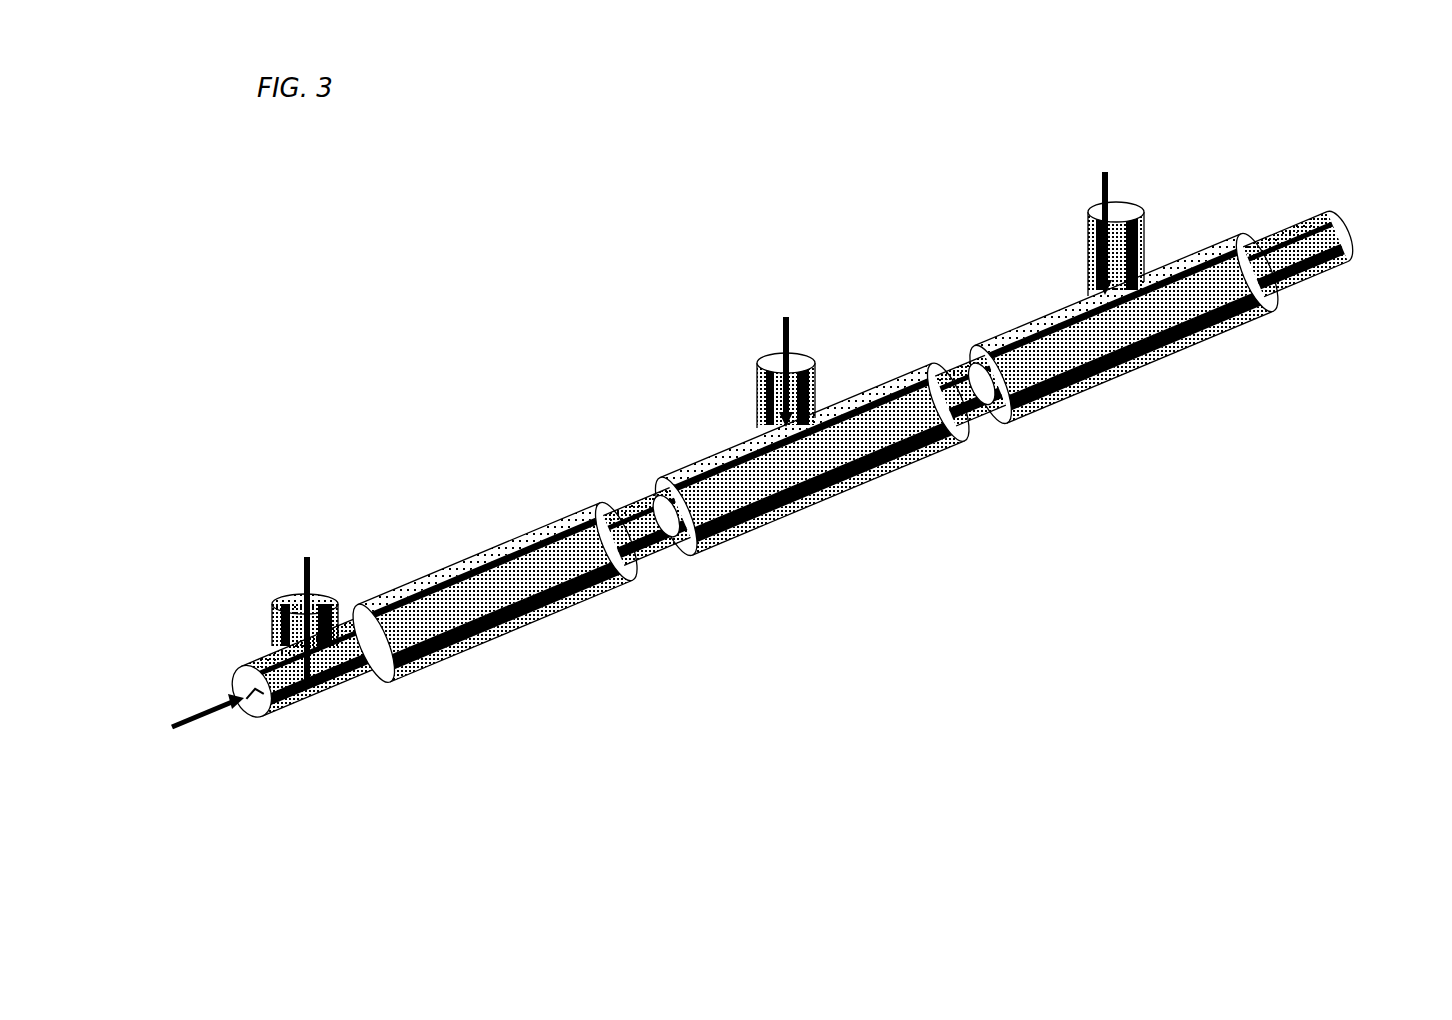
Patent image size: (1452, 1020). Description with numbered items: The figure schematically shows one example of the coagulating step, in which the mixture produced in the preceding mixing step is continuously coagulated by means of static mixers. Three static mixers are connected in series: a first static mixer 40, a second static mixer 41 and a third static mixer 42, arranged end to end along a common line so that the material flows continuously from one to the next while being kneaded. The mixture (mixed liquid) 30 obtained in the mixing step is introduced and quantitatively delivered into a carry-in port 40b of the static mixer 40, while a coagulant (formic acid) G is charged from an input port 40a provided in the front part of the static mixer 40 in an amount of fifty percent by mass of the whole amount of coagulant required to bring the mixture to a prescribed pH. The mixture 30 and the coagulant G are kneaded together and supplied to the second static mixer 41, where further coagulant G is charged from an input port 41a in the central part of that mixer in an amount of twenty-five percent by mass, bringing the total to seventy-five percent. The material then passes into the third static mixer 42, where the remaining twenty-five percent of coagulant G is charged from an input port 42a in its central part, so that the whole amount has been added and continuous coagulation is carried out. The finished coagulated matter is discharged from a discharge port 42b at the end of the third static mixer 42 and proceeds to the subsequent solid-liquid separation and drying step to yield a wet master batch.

The mixture (mixed liquid) 30 is at (313, 608).
The static mixer 40 is at (508, 540).
The input port 40a is at (250, 700).
The carry-in port 40b is at (267, 628).
The second static mixer 41 is at (878, 385).
The input port 41a is at (755, 407).
The third static mixer 42 is at (1202, 245).
The input port 42a is at (1085, 257).
The discharge port 42b is at (1332, 212).
The coagulant (formic acid) G is at (626, 449).